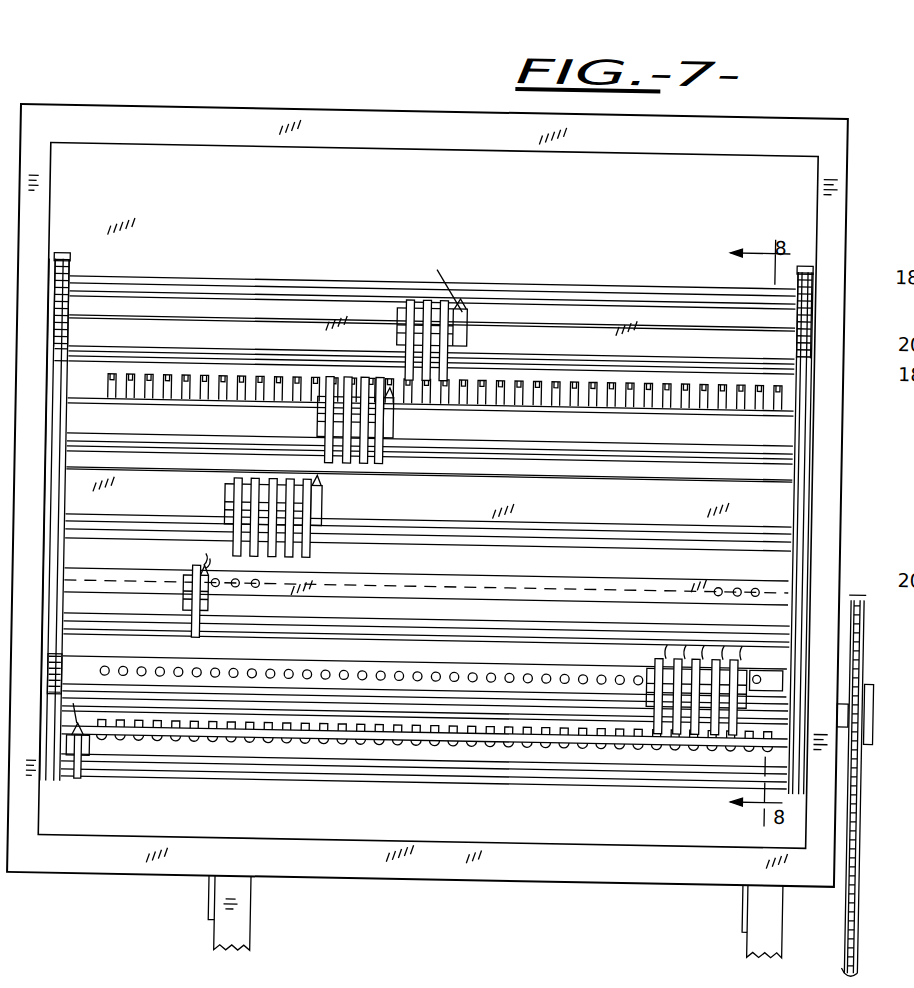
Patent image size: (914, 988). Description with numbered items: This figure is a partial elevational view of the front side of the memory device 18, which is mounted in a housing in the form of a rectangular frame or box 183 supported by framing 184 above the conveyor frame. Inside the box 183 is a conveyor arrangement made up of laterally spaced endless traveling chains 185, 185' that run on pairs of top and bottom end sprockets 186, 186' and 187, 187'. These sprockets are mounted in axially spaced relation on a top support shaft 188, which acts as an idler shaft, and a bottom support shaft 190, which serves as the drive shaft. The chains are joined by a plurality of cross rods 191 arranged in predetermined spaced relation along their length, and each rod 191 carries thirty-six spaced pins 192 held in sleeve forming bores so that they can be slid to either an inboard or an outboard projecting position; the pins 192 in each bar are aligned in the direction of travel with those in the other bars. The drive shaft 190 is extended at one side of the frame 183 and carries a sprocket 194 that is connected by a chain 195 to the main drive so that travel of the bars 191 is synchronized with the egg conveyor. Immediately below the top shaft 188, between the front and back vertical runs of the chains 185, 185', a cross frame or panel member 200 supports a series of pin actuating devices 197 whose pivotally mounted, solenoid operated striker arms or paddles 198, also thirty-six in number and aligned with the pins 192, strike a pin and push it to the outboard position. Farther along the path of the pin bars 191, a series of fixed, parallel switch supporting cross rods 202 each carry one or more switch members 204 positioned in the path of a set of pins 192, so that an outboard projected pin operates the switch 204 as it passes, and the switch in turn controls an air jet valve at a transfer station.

The memory device 18 is at (854, 183).
The rectangular frame or box 183 is at (850, 243).
The framing 184 is at (252, 901).
The endless traveling chain 185 is at (772, 532).
The endless traveling chain 185' is at (91, 521).
The top end sprocket 186 is at (764, 311).
The top end sprocket 186' is at (92, 292).
The bottom end sprocket 187 is at (767, 669).
The bottom end sprocket 187' is at (417, 692).
The top support shaft 188 is at (528, 282).
The bottom support shaft 190 is at (254, 696).
The cross rod 191 is at (585, 578).
The pin 192 is at (764, 575).
The sprocket 194 is at (880, 667).
The chain 195 is at (875, 817).
The pin actuating device 197 is at (522, 394).
The striker arm or paddle 198 is at (537, 375).
The cross frame or panel member 200 is at (678, 399).
The switch supporting cross rod 202 is at (649, 349).
The switch member 204 is at (405, 333).